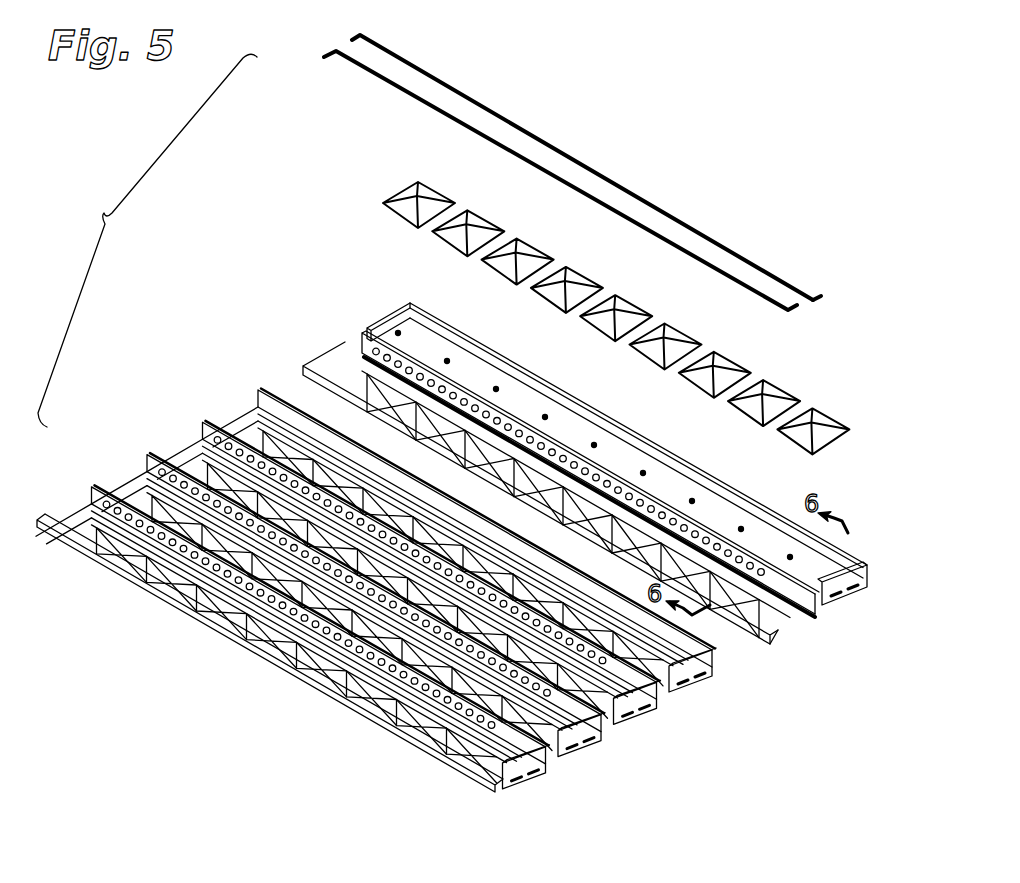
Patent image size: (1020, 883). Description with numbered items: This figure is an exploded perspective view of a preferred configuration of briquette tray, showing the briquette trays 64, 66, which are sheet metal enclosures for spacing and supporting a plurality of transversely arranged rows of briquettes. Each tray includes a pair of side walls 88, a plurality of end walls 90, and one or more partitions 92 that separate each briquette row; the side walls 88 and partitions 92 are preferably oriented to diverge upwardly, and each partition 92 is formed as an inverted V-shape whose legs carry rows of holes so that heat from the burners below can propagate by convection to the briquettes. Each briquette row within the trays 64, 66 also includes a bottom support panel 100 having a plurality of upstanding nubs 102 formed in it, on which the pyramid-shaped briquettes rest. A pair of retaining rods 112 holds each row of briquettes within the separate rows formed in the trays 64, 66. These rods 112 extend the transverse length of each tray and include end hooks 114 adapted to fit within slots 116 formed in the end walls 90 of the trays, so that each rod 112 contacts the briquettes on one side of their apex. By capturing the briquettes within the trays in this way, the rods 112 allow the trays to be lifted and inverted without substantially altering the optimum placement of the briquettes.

The briquette tray 64 is at (376, 423).
The briquette tray 66 is at (601, 453).
The bottom support panel 100 is at (470, 372).
The upstanding nubs 102 is at (546, 415).
The partition 92 is at (598, 462).
The retaining rods 112 is at (727, 251).
The end hooks 114 is at (816, 300).
The side walls 88 is at (845, 548).
The slots 116 is at (860, 583).
The end walls 90 is at (826, 598).